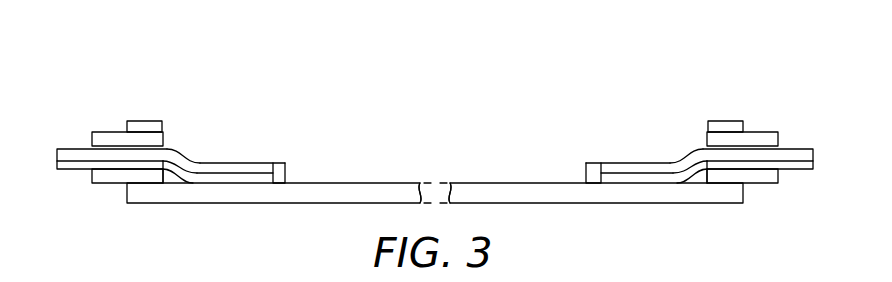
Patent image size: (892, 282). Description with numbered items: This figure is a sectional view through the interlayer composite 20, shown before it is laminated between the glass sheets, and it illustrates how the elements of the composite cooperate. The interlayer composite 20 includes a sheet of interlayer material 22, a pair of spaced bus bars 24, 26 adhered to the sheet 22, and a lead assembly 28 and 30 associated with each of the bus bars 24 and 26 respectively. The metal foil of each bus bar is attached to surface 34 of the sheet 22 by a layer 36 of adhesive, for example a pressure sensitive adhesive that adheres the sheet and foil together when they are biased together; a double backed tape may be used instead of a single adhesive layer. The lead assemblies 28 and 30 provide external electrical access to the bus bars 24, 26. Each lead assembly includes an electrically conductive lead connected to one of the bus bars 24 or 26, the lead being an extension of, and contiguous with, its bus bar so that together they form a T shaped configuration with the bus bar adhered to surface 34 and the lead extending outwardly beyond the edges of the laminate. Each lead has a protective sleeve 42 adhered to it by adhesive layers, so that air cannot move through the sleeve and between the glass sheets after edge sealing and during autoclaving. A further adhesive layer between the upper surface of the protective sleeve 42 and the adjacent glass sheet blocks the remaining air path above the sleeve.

The interlayer composite 20 is at (720, 106).
The sheet of interlayer material 22 is at (518, 175).
The bus bar 24 is at (629, 153).
The bus bar 26 is at (248, 152).
The lead assembly 28 is at (720, 106).
The lead assembly 30 is at (152, 108).
The surface of the sheet 34 is at (468, 178).
The layer of adhesive 36 is at (274, 162).
The protective sleeve 42 is at (105, 132).